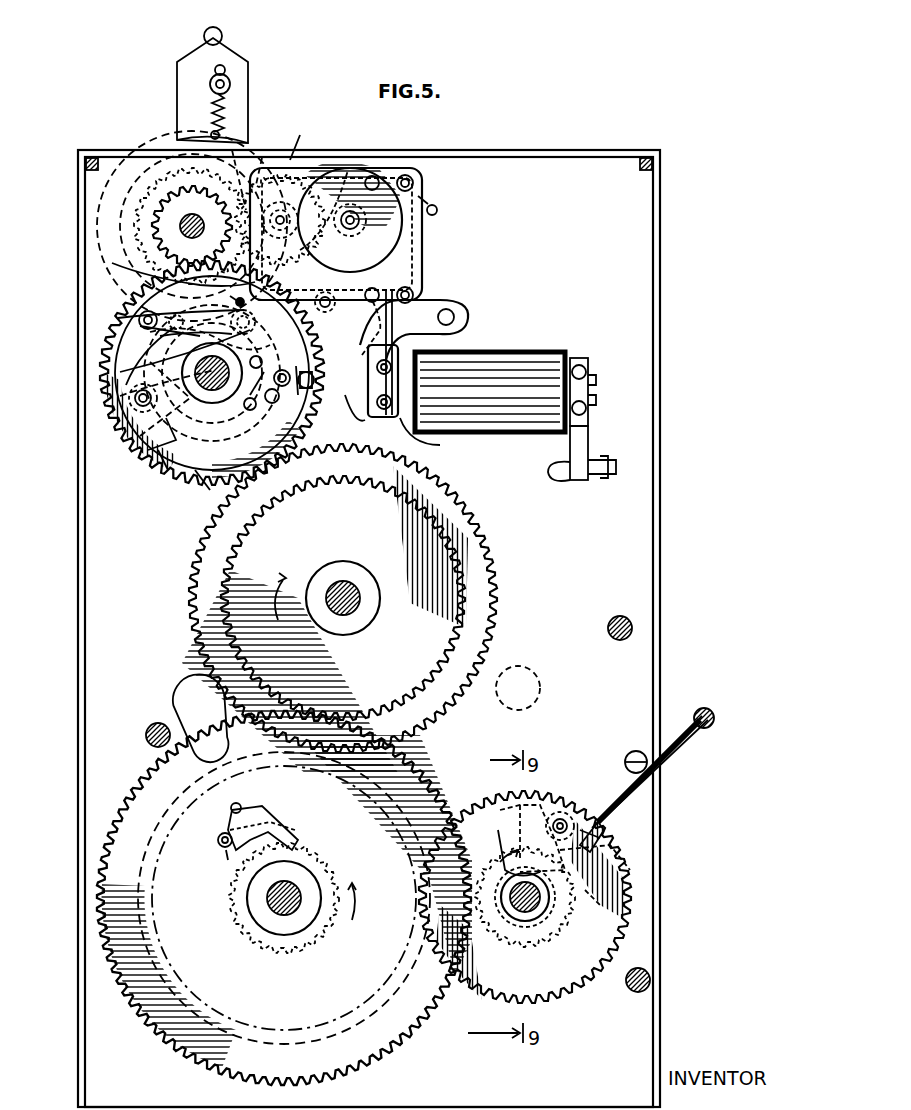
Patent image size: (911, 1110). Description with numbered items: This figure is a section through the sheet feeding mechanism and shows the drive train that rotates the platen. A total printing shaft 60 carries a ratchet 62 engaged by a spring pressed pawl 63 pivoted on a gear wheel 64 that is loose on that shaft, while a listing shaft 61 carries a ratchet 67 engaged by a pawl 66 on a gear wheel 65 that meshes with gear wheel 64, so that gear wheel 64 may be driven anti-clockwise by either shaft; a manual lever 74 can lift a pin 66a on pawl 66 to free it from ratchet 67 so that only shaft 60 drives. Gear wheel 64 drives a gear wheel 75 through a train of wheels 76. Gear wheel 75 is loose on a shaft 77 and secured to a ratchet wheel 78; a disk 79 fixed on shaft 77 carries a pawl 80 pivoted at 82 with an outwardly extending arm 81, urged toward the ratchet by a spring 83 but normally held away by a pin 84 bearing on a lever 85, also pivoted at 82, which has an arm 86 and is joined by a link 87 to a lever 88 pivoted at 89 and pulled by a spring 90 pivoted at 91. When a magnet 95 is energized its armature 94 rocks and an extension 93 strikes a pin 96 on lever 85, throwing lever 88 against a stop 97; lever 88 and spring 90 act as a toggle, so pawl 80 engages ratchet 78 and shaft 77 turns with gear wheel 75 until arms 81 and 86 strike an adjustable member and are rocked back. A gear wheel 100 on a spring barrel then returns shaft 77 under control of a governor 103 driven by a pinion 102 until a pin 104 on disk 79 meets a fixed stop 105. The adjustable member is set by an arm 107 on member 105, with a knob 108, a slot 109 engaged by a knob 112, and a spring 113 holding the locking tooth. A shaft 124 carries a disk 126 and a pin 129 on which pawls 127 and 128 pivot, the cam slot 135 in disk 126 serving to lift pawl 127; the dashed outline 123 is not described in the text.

The total printing shaft 60 is at (290, 912).
The listing shaft 61 is at (538, 912).
The ratchet 62 is at (342, 884).
The spring pressed pawl 63 is at (262, 806).
The gear wheel 64 is at (440, 790).
The gear wheel 65 is at (488, 800).
The pawl 66 is at (548, 805).
The pin 66a is at (600, 840).
The ratchet 67 is at (580, 898).
The manual lever 74 is at (690, 752).
The gear wheel 75 is at (230, 482).
The train of wheels 76 is at (462, 515).
The shaft 77 is at (226, 380).
The ratchet wheel 78 is at (130, 398).
The disk 79 is at (208, 482).
The pawl 80 is at (185, 320).
The outwardly extending arm 81 is at (300, 272).
The pivot 82 is at (250, 322).
The spring 83 is at (230, 296).
The pin 84 is at (118, 312).
The lever 85 is at (120, 372).
The outwardly extending arm 86 is at (290, 268).
The link 87 is at (132, 396).
The lever 88 is at (190, 430).
The pivot 89 is at (120, 410).
The spring 90 is at (278, 386).
The pivot 91 is at (362, 326).
The extension 93 is at (172, 268).
The armature 94 is at (440, 448).
The magnet 95 is at (528, 352).
The pin 96 is at (150, 332).
The stop 97 is at (172, 475).
The gear wheel 100 is at (360, 168).
The gear pinion 102 is at (404, 168).
The governor 103 is at (400, 206).
The pin 104 is at (378, 418).
The fixed stop 105 is at (312, 390).
The arm 107 is at (200, 50).
The knob 108 is at (223, 36).
The slot 109 is at (226, 70).
The knob 112 is at (232, 84).
The spring 113 is at (212, 102).
The gear 123 is at (190, 226).
The shaft 124 is at (180, 228).
The disk 126 is at (140, 166).
The spring pressed pawl 127 is at (276, 140).
The spring pressed pawl 128 is at (262, 140).
The pin 129 is at (172, 160).
The cam slot 135 is at (312, 140).